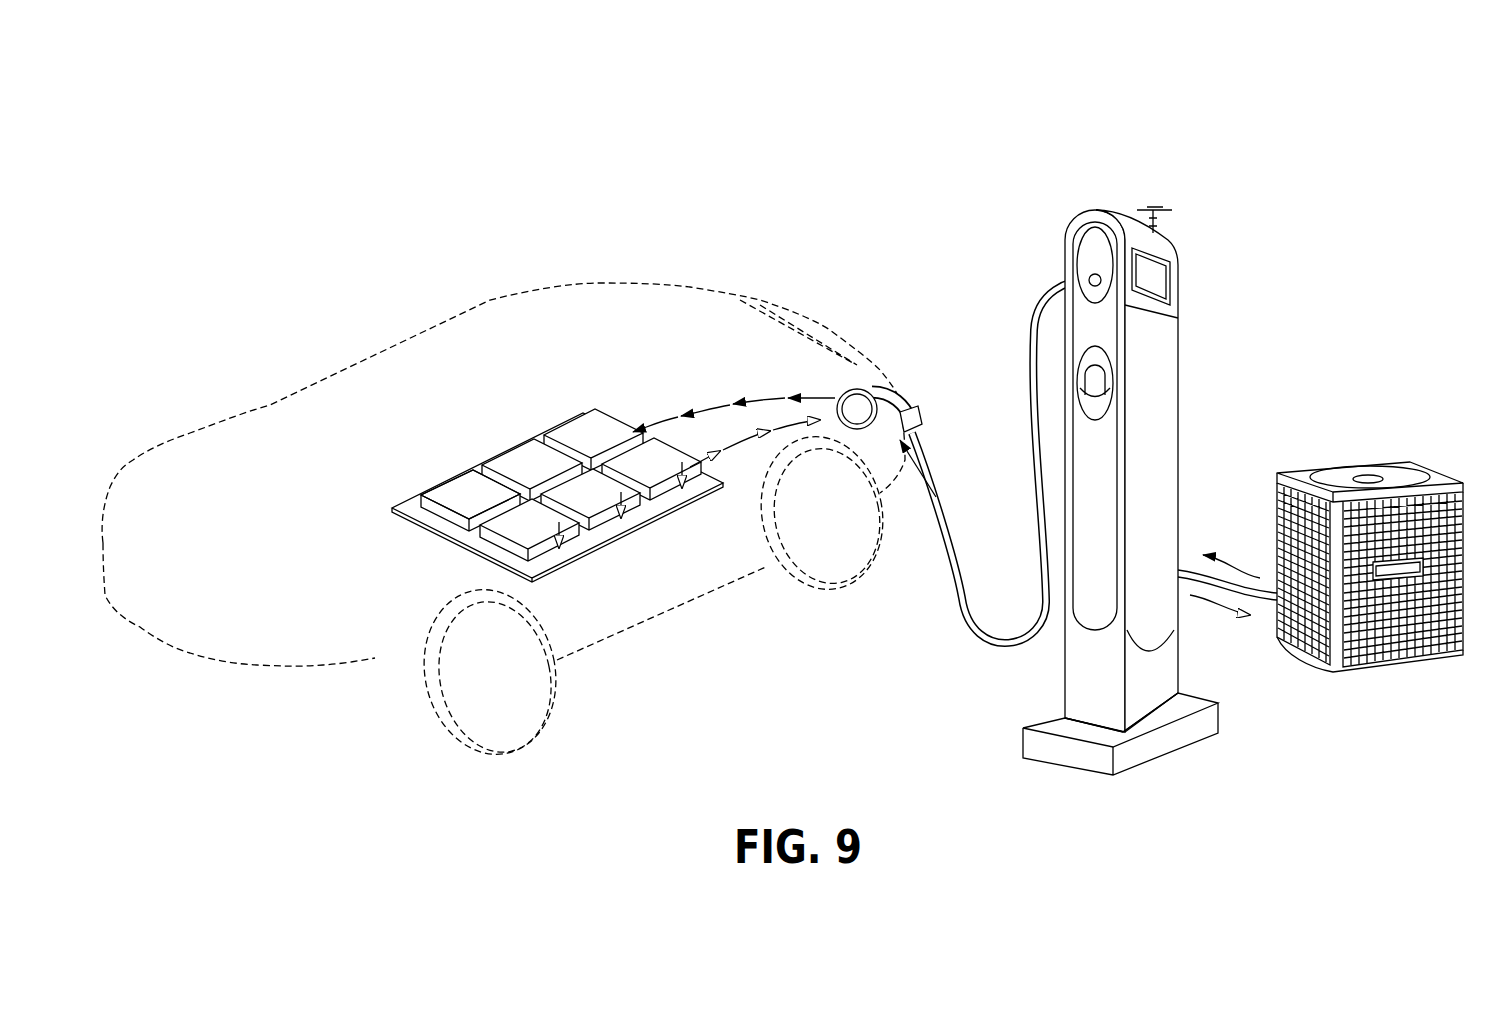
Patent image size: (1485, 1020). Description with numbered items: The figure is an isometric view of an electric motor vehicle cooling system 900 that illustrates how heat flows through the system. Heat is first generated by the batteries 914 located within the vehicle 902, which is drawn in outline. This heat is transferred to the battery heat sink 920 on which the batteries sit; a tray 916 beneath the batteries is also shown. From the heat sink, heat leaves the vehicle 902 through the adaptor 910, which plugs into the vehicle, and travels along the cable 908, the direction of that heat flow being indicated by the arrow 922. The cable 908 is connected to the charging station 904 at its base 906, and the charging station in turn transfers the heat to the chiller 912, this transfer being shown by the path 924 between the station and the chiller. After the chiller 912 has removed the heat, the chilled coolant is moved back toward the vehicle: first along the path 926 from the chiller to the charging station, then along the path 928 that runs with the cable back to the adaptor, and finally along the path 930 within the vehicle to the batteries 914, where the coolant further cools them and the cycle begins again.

The electric motor vehicle cooling system 900 is at (569, 111).
The vehicle 902 is at (480, 286).
The charging station 904 is at (1301, 168).
The base 906 is at (1162, 368).
The cable 908 is at (1030, 313).
The adaptor 910 is at (858, 403).
The chiller 912 is at (1358, 465).
The batteries 914 is at (458, 492).
The battery tray 916 is at (443, 543).
The battery heat sink 920 is at (630, 560).
The heat flow along cable 922 is at (992, 614).
The heat transfer path to chiller 924 is at (1220, 605).
The chilled coolant return path 926 is at (1235, 562).
The chilled coolant return path 928 is at (936, 497).
The chilled coolant return path 930 is at (703, 407).